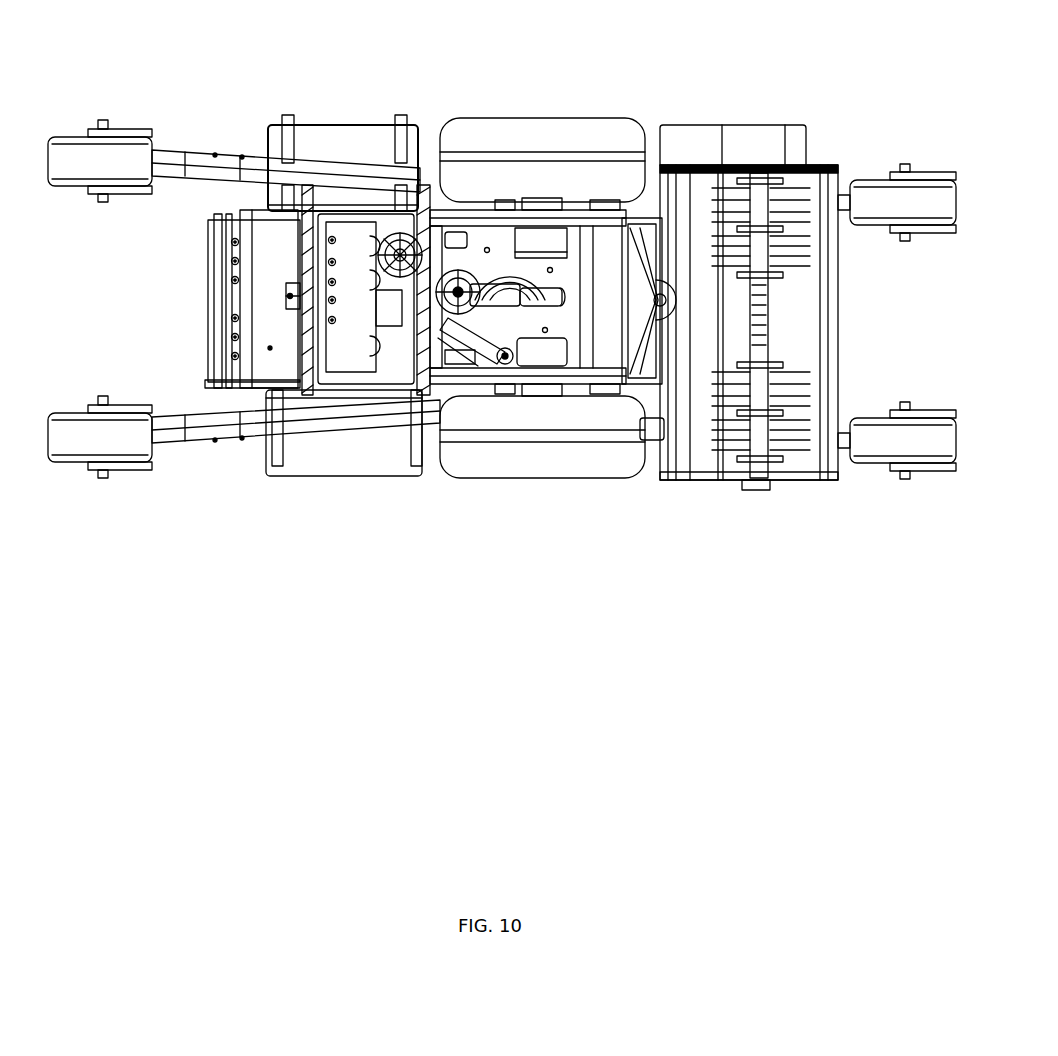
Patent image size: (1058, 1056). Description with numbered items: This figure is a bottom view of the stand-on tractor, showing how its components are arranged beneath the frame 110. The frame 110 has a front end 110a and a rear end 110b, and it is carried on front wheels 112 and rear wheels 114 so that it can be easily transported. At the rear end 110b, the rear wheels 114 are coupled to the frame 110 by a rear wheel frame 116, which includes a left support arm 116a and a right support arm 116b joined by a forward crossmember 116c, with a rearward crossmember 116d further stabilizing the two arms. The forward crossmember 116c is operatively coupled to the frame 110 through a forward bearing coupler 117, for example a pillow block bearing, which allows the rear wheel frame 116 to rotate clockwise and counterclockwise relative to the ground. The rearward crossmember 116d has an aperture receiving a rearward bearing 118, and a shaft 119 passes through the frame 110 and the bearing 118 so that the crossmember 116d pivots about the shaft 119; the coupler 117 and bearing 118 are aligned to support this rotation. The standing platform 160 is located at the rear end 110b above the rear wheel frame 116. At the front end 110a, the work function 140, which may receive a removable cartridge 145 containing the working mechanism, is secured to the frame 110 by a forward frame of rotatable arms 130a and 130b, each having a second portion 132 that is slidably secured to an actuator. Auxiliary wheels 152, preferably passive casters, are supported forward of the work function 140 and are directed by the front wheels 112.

The frame 110 is at (411, 255).
The front end 110a is at (206, 106).
The rear end 110b is at (634, 66).
The front wheels 112 is at (458, 122).
The rear wheels 114 is at (70, 140).
The rear wheel frame 116 is at (253, 352).
The left support arm 116a is at (196, 462).
The right support arm 116b is at (175, 178).
The forward crossmember 116c is at (425, 185).
The rearward crossmember 116d is at (313, 188).
The forward bearing coupler 117 is at (470, 366).
The rearward bearing 118 is at (293, 298).
The shaft 119 is at (289, 298).
The rotatable arm 130a is at (646, 396).
The rotatable arm 130b is at (680, 130).
The second portion 132 is at (540, 297).
The work function 140 is at (793, 277).
The cartridge 145 is at (808, 288).
The auxiliary wheels 152 is at (867, 180).
The platform 160 is at (210, 305).